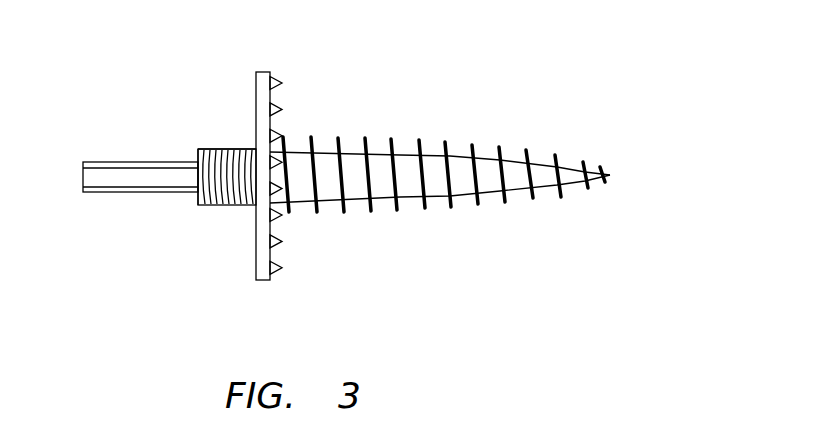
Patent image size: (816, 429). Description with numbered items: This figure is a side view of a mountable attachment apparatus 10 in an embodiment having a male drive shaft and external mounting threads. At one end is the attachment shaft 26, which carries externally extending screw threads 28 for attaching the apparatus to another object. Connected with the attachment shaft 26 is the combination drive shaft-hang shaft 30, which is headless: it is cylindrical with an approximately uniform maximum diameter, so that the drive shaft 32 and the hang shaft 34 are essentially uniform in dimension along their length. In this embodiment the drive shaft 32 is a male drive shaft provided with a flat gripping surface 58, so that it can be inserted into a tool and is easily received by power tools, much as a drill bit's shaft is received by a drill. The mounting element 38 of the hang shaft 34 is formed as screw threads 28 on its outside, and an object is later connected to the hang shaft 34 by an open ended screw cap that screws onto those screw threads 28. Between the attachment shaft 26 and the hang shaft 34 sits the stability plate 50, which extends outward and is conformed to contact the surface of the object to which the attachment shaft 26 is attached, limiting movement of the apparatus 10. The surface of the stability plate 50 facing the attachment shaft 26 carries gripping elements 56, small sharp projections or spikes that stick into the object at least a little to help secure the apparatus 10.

The mountable attachment apparatus 10 is at (593, 67).
The attachment shaft 26 is at (433, 197).
The screw threads 28 is at (235, 205).
The combination drive shaft-hang shaft 30 is at (189, 204).
The drive shaft 32 is at (93, 162).
The hang shaft 34 is at (240, 148).
The mounting element 38 is at (199, 133).
The stability plate 50 is at (265, 282).
The gripping element 56 is at (283, 108).
The flat gripping surface 58 is at (99, 181).